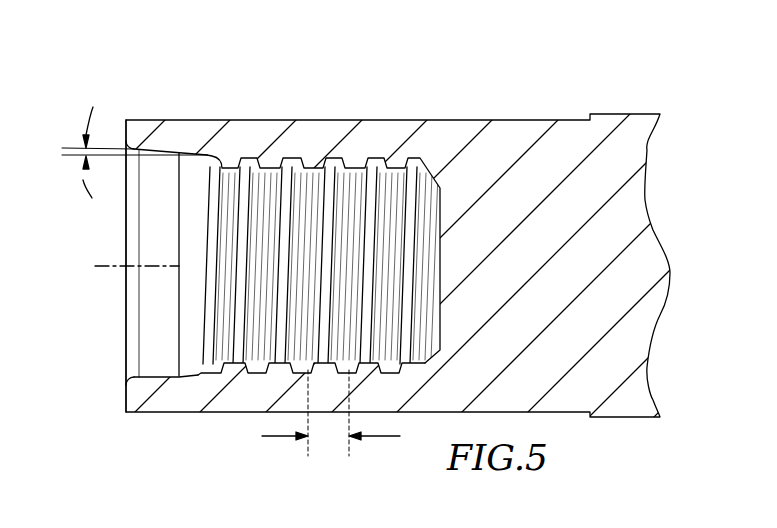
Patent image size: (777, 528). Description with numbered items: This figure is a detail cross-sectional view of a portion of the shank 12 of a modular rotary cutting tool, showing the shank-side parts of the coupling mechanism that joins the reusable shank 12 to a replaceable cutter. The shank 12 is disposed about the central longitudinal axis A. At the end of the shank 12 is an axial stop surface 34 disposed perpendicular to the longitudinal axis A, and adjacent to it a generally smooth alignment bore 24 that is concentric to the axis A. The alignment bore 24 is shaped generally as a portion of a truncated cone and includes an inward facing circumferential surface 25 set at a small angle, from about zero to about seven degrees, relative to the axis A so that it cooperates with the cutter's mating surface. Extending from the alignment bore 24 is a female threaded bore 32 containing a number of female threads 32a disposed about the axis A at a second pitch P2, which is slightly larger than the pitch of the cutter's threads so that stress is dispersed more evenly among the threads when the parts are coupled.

The shank 12 is at (351, 105).
The alignment bore 24 is at (150, 333).
The inward facing circumferential surface 25 is at (152, 377).
The female threaded bore 32 is at (353, 178).
The female threads 32a is at (300, 372).
The axial stop surface 34 is at (126, 303).
The central longitudinal axis A is at (108, 263).
The second pitch P2 is at (328, 438).